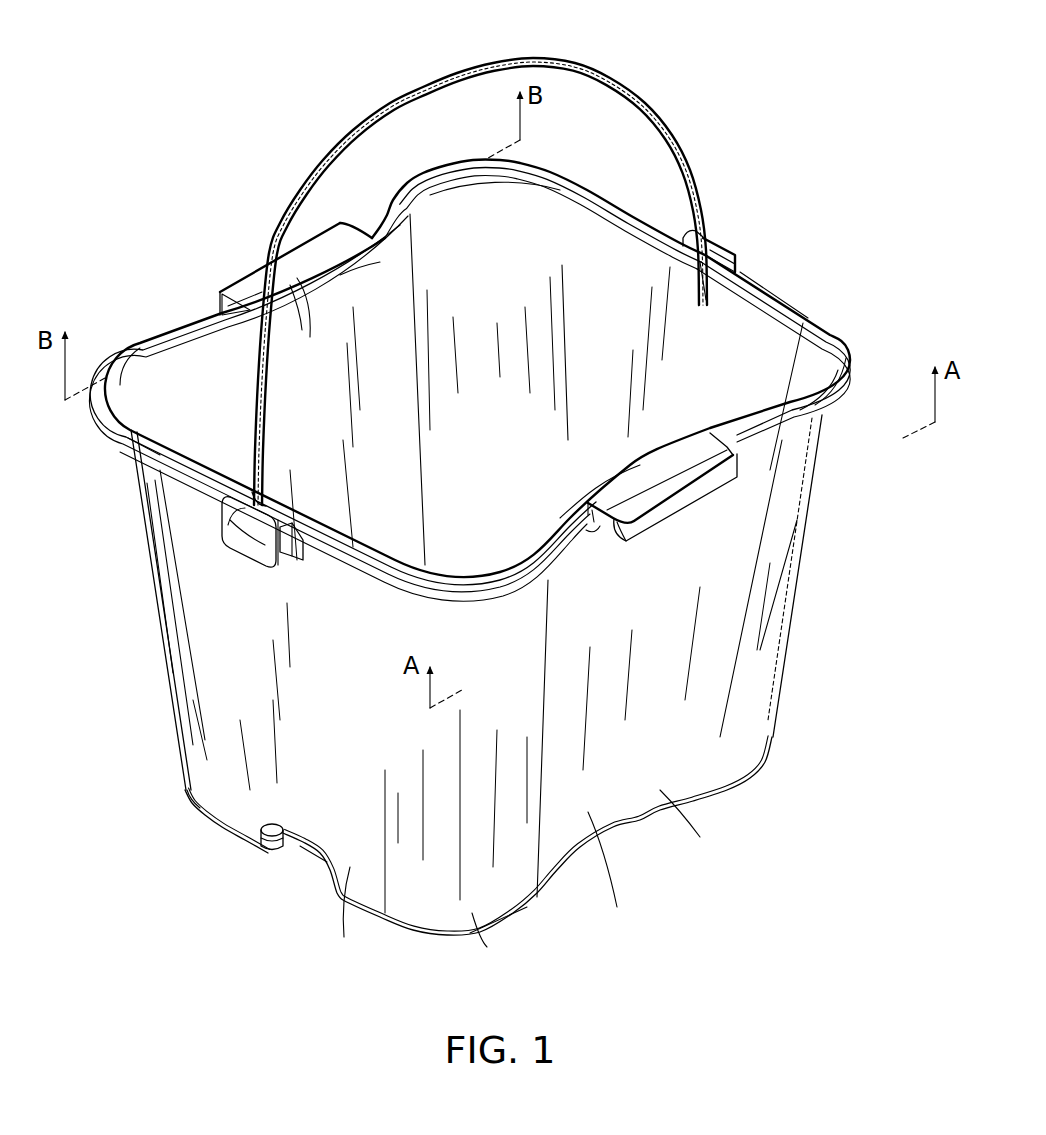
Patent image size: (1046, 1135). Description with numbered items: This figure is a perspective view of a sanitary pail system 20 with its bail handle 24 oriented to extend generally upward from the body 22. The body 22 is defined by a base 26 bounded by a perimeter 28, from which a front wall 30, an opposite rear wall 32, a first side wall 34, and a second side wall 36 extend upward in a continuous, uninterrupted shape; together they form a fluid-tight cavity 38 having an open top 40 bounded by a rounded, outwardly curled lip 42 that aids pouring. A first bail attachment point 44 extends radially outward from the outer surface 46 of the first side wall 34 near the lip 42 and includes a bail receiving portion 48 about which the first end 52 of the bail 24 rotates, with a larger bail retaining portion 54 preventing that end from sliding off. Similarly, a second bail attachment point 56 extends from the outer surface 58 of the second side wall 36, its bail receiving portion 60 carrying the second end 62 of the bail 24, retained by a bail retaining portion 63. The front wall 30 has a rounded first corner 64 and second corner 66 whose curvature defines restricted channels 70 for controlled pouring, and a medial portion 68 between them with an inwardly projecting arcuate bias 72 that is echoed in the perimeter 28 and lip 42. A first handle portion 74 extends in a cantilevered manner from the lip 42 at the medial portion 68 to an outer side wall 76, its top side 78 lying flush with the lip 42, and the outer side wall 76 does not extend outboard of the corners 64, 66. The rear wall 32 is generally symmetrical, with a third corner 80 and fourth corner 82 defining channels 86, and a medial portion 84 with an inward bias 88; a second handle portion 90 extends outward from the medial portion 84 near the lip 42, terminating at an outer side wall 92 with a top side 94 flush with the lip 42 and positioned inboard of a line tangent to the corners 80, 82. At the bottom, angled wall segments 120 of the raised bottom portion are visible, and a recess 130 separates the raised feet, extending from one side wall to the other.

The sanitary pail system 20 is at (845, 170).
The body 22 is at (775, 737).
The bail handle 24 is at (617, 76).
The base 26 is at (508, 936).
The perimeter 28 is at (240, 843).
The front wall 30 is at (590, 840).
The rear wall 32 is at (183, 327).
The first side wall 34 is at (347, 870).
The second side wall 36 is at (767, 328).
The cavity 38 is at (742, 398).
The open top 40 is at (193, 423).
The lip 42 is at (843, 393).
The first bail attachment point 44 is at (241, 548).
The outer surface 46 is at (315, 701).
The bail receiving portion 48 is at (285, 577).
The first end 52 is at (263, 495).
The bail retaining portion 54 is at (242, 527).
The second bail attachment point 56 is at (742, 245).
The outer surface 58 is at (818, 516).
The bail receiving portion 60 is at (678, 228).
The second end 62 is at (700, 268).
The bail retaining portion 63 is at (742, 250).
The first corner 64 is at (473, 913).
The second corner 66 is at (803, 563).
The medial portion 68 is at (680, 790).
The channels 70 is at (715, 380).
The bias 72 is at (612, 458).
The first handle portion 74 is at (597, 532).
The outer side wall 76 is at (637, 527).
The top side 78 is at (662, 478).
The third corner 80 is at (520, 222).
The fourth corner 82 is at (152, 552).
The medial portion 84 is at (305, 423).
The channels 86 is at (160, 382).
The bias 88 is at (363, 273).
The second handle portion 90 is at (370, 237).
The outer side wall 92 is at (250, 262).
The top side 94 is at (297, 278).
The wall segments 120 is at (283, 830).
The recess 130 is at (305, 856).